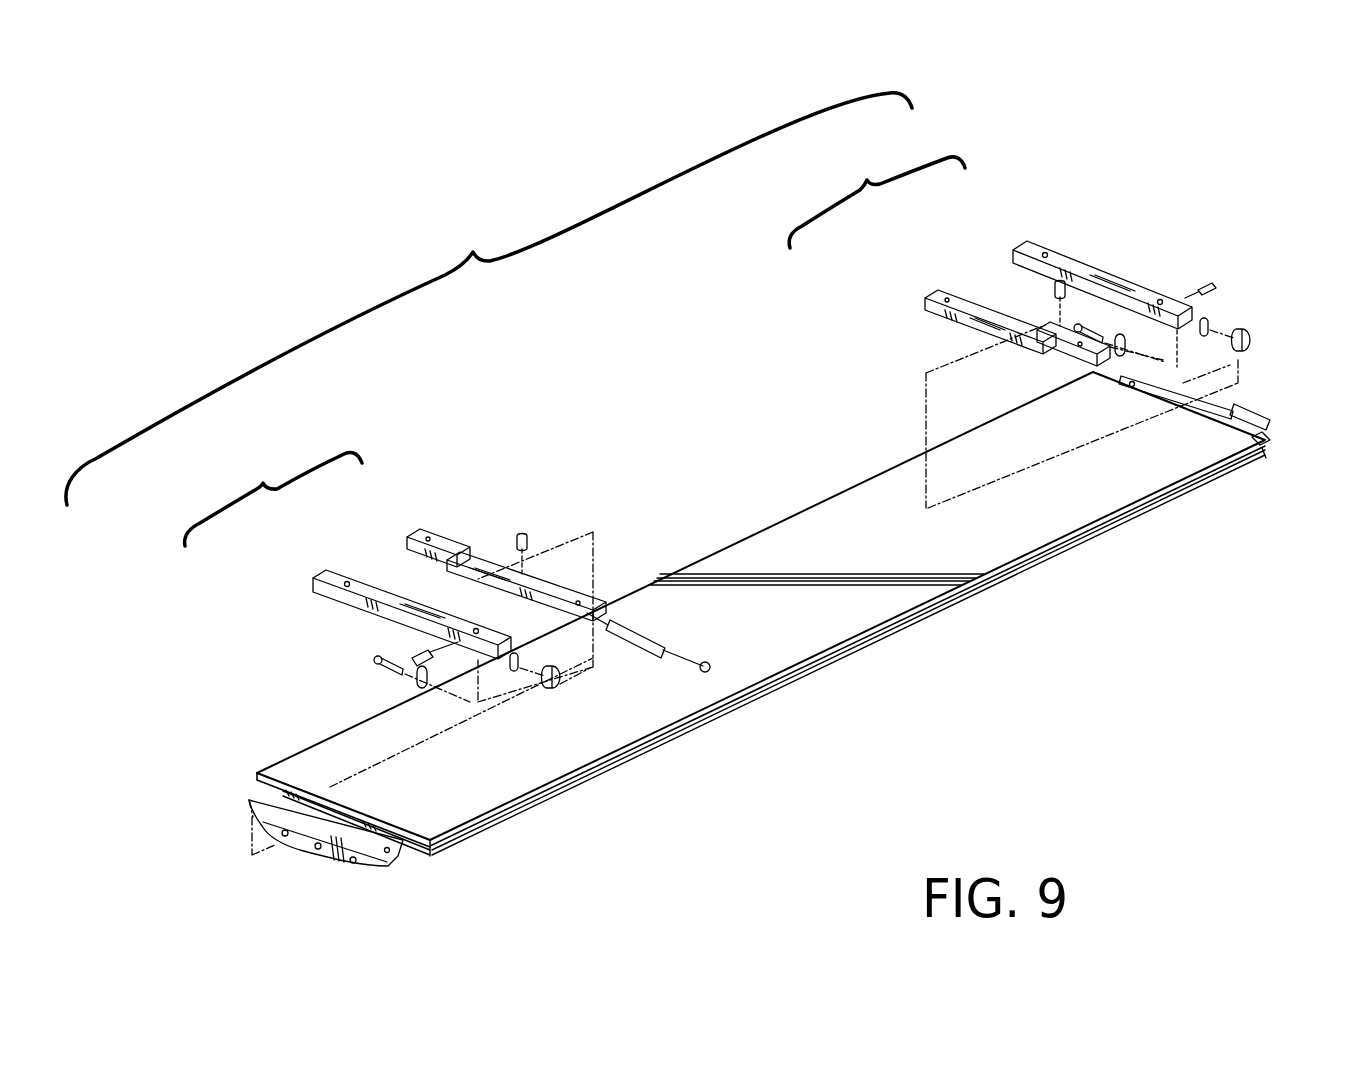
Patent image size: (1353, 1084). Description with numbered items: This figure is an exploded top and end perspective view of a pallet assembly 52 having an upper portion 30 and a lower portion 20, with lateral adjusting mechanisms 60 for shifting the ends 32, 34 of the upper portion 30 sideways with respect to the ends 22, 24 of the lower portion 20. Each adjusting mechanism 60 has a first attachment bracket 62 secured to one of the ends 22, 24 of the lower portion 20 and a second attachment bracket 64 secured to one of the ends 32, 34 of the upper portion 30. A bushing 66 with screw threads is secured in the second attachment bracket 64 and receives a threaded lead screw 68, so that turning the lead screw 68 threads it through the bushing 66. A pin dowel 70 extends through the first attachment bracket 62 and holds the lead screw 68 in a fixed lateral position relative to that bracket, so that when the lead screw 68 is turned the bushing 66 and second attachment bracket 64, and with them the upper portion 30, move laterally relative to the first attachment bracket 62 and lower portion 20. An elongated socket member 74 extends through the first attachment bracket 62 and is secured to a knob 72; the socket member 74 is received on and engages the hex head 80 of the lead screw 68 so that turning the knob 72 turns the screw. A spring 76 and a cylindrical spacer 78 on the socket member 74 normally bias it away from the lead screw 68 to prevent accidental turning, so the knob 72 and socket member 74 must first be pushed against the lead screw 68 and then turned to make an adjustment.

The lower portion 20 is at (327, 862).
The end of lower portion 22 is at (363, 862).
The end of lower portion 24 is at (1267, 438).
The upper portion 30 is at (1095, 542).
The end of upper portion 32 is at (422, 847).
The end of upper portion 34 is at (1265, 451).
The pallet assembly 52 is at (489, 299).
The adjusting mechanism 60 is at (575, 348).
The first attachment bracket 62 is at (302, 576).
The second attachment bracket 64 is at (405, 535).
The bushing 66 is at (522, 532).
The lead screw 68 is at (652, 655).
The pin dowel 70 is at (420, 656).
The knob 72 is at (565, 684).
The elongated socket member 74 is at (370, 660).
The spring 76 is at (415, 681).
The cylindrical spacer 78 is at (512, 674).
The hex head 80 is at (708, 663).